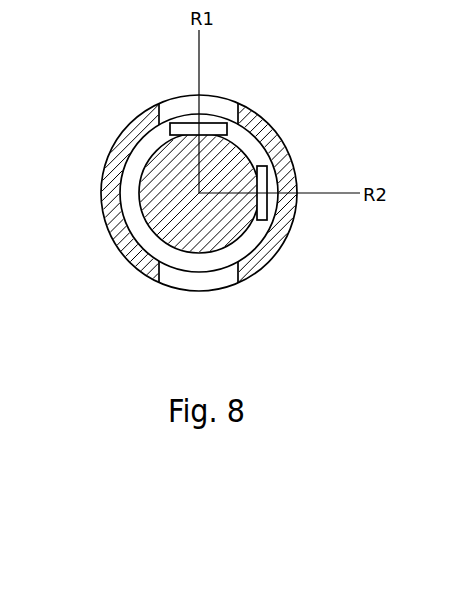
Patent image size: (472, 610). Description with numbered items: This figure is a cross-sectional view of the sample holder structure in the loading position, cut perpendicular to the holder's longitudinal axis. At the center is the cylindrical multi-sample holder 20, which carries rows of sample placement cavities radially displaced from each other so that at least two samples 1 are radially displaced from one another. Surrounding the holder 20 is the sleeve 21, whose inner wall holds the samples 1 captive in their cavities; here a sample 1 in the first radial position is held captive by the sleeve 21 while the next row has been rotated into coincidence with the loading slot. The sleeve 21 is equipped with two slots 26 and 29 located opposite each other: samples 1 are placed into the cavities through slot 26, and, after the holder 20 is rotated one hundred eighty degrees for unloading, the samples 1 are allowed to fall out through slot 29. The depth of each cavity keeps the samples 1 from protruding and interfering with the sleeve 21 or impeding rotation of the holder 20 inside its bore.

The sample 1 is at (183, 128).
The sample holder 20 is at (162, 210).
The sleeve 21 is at (117, 165).
The slot 26 is at (215, 108).
The slot 29 is at (220, 278).